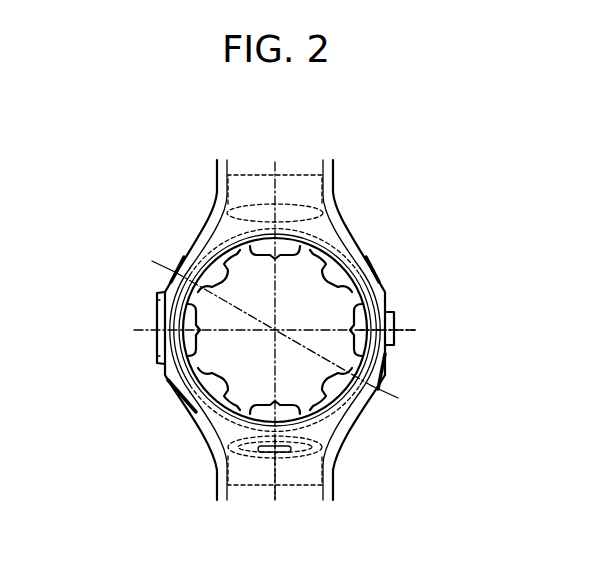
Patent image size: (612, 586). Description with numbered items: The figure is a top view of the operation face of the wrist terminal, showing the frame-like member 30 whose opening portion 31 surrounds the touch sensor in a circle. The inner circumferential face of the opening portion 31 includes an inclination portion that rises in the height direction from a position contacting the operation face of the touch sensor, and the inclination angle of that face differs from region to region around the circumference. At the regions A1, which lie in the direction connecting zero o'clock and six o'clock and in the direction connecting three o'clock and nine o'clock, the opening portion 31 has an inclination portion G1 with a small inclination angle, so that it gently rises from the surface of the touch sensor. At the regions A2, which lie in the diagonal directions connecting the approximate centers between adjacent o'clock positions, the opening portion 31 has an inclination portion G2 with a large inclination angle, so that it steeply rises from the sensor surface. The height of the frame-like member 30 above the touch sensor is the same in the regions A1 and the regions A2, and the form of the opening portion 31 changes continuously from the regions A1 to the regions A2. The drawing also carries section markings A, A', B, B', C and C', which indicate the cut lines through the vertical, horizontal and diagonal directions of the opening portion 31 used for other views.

The frame-like member 30 is at (212, 214).
The opening portion 31 is at (336, 247).
The inclination portion G1 is at (265, 236).
The inclination portion G2 is at (183, 254).
The regions A1 is at (275, 330).
The regions A2 is at (275, 330).
The section line A is at (272, 319).
The section line A' is at (273, 481).
The section line B is at (265, 331).
The section line B' is at (400, 331).
The section line C is at (254, 315).
The section line C' is at (396, 399).